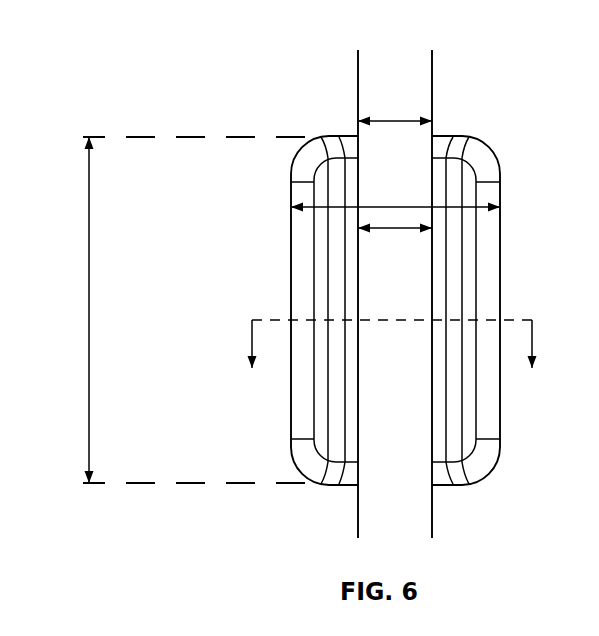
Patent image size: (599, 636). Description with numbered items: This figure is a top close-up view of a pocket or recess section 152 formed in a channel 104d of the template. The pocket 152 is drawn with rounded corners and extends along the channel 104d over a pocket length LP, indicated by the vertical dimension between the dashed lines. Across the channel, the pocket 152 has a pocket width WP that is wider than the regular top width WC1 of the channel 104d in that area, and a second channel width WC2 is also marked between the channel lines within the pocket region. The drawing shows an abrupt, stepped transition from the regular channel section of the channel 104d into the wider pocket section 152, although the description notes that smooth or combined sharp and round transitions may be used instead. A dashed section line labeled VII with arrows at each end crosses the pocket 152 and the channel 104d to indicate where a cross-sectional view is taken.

The pocket section 152 is at (314, 114).
The channel 104d is at (410, 516).
The regular top width of the channel WC1 is at (385, 118).
The pocket width WP is at (377, 205).
The second channel width WC2 is at (410, 231).
The pocket length LP is at (89, 308).
The section line VII- VII is at (392, 361).